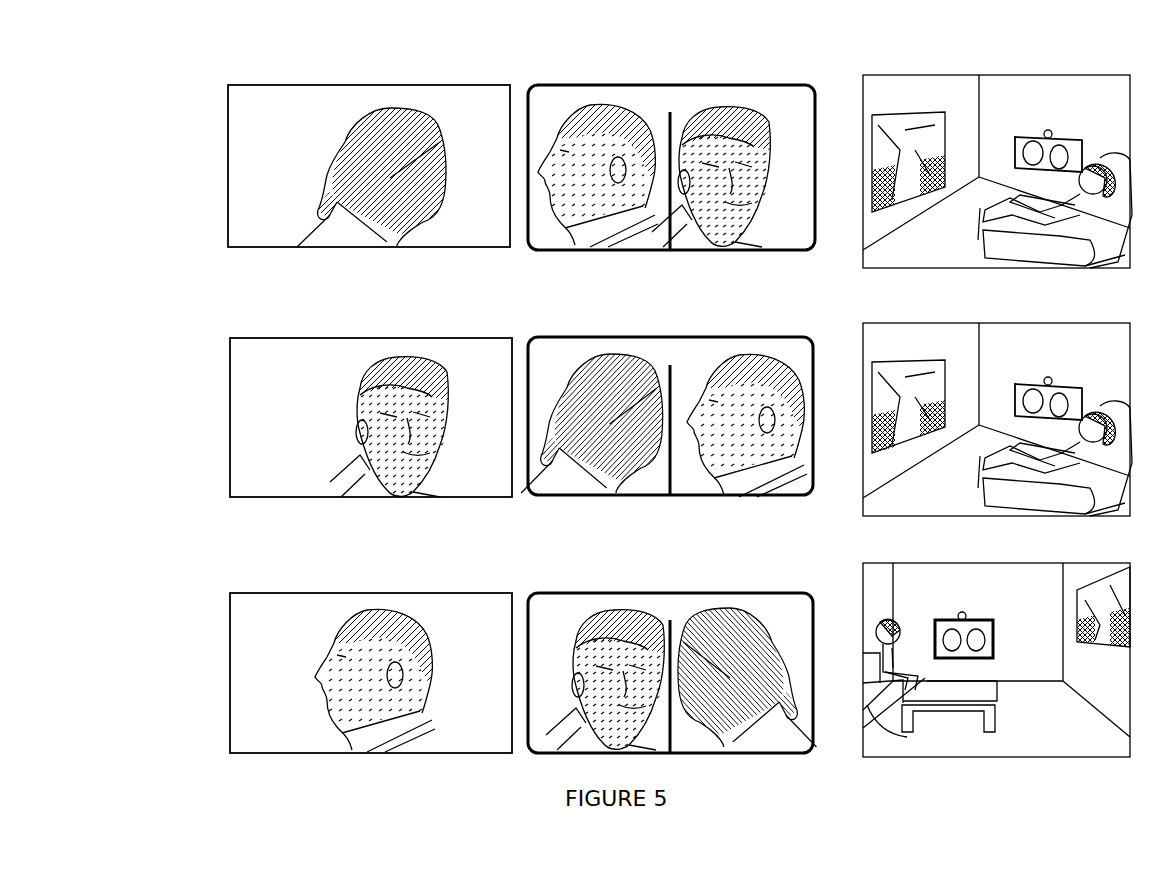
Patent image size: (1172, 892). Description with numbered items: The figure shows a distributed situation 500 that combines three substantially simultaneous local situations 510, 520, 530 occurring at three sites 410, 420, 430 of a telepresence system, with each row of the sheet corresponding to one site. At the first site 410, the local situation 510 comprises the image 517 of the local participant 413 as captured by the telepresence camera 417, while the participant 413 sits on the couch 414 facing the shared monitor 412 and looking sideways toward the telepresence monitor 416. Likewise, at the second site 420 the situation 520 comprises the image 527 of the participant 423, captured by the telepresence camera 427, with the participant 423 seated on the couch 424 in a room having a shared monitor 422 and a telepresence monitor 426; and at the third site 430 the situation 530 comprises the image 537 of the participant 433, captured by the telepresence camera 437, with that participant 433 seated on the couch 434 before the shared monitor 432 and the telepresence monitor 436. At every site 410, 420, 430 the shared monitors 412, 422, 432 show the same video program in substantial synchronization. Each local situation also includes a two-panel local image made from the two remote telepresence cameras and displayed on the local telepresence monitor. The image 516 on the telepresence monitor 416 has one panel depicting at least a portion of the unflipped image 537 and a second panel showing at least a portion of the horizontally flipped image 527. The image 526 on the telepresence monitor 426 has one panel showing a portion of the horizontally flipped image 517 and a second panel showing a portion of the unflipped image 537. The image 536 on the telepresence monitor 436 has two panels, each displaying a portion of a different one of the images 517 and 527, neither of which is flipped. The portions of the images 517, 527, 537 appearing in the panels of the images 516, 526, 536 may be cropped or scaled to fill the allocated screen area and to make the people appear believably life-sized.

The distributed situation 500 is at (1057, 50).
The local situation 510 is at (200, 253).
The local situation 520 is at (200, 513).
The local situation 530 is at (200, 760).
The image 517 is at (353, 85).
The telepresence monitor 416 is at (700, 85).
The image 516 is at (684, 109).
The shared monitor 412 is at (893, 115).
The telepresence camera 417 is at (1052, 131).
The participant 413 is at (1108, 166).
The couch 414 is at (985, 240).
The site 410 is at (960, 268).
The image 527 is at (353, 338).
The telepresence monitor 426 is at (720, 337).
The image 526 is at (684, 362).
The shared monitor 422 is at (893, 362).
The telepresence camera 427 is at (1052, 378).
The participant 423 is at (1108, 413).
The couch 424 is at (995, 481).
The site 420 is at (962, 517).
The image 537 is at (353, 593).
The telepresence monitor 436 is at (720, 593).
The image 536 is at (684, 618).
The shared monitor 432 is at (1092, 645).
The telepresence camera 437 is at (962, 611).
The participant 433 is at (893, 622).
The couch 434 is at (875, 728).
The site 430 is at (982, 757).